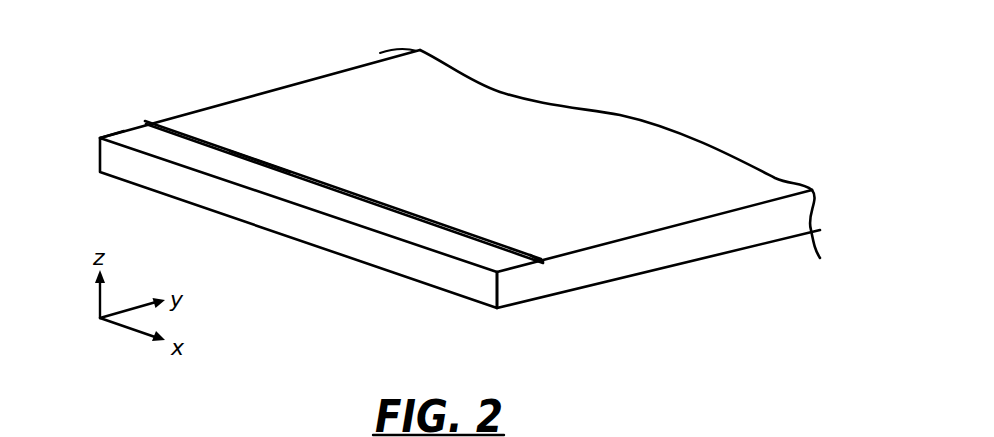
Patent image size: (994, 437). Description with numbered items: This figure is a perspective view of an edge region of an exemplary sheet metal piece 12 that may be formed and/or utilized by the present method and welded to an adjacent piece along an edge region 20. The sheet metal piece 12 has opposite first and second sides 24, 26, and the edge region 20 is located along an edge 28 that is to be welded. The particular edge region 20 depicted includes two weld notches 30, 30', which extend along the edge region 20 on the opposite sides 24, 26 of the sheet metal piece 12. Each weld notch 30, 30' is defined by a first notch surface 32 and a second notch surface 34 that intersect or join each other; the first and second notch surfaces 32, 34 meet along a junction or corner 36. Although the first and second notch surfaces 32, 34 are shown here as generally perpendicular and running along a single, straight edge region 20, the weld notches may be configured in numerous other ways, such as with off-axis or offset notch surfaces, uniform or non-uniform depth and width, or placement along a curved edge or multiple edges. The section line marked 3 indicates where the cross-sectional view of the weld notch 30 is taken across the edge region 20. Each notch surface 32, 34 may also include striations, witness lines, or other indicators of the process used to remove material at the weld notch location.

The sheet metal piece 12 is at (687, 46).
The edge region 20 is at (562, 313).
The first side 24 is at (437, 83).
The second side 26 is at (667, 265).
The edge 28 is at (380, 257).
The weld notch 30 is at (103, 112).
The weld notch 30' is at (520, 318).
The first notch surface 32 is at (146, 122).
The second notch surface 34 is at (273, 187).
The junction or corner 36 is at (543, 262).
The section line 3- 3 is at (472, 209).